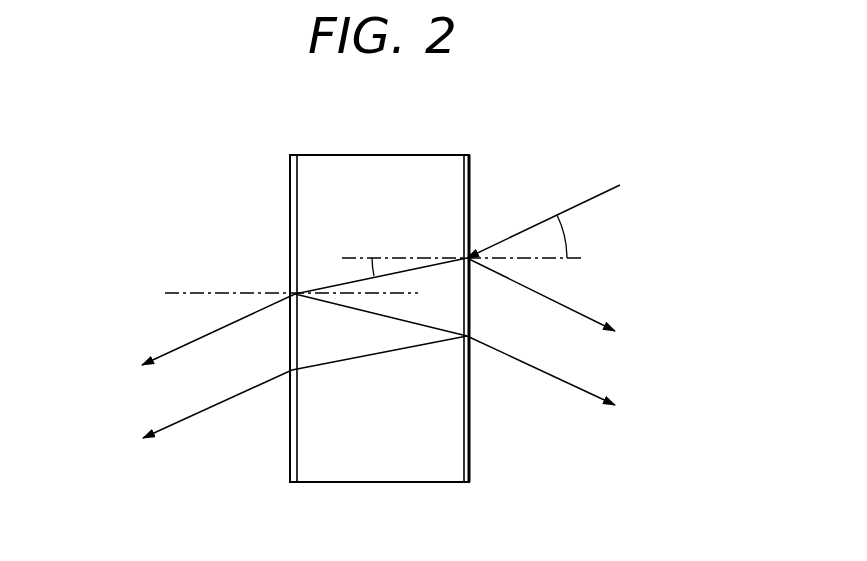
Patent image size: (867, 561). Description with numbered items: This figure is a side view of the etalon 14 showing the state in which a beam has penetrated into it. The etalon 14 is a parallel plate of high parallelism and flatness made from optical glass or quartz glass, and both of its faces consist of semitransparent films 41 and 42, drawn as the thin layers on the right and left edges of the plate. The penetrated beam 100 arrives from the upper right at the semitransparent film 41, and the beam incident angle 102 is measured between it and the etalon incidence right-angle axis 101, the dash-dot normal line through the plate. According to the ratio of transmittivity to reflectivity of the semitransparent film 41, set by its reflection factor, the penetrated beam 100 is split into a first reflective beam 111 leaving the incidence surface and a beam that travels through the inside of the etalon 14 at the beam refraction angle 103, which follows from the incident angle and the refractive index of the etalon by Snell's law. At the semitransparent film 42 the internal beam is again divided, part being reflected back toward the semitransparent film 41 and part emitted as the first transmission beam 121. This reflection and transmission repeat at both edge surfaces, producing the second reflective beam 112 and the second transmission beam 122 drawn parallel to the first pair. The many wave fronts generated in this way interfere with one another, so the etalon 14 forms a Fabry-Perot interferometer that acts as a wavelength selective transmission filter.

The etalon 14 is at (385, 167).
The semitransparent film 41 is at (470, 170).
The semitransparent film 42 is at (290, 172).
The penetrated beam 100 is at (604, 190).
The etalon incidence right-angle axis 101 is at (415, 258).
The beam incident angle 102 is at (572, 238).
The beam refraction angle 103 is at (372, 270).
The first reflective beam 111 is at (605, 326).
The second reflective beam 112 is at (603, 400).
The first transmission beam 121 is at (150, 358).
The second transmission beam 122 is at (148, 433).